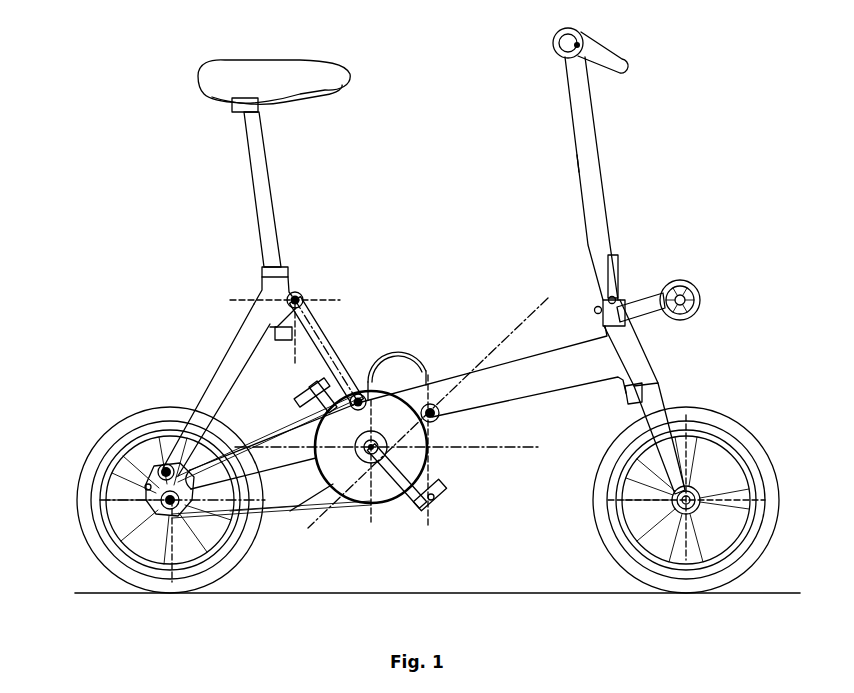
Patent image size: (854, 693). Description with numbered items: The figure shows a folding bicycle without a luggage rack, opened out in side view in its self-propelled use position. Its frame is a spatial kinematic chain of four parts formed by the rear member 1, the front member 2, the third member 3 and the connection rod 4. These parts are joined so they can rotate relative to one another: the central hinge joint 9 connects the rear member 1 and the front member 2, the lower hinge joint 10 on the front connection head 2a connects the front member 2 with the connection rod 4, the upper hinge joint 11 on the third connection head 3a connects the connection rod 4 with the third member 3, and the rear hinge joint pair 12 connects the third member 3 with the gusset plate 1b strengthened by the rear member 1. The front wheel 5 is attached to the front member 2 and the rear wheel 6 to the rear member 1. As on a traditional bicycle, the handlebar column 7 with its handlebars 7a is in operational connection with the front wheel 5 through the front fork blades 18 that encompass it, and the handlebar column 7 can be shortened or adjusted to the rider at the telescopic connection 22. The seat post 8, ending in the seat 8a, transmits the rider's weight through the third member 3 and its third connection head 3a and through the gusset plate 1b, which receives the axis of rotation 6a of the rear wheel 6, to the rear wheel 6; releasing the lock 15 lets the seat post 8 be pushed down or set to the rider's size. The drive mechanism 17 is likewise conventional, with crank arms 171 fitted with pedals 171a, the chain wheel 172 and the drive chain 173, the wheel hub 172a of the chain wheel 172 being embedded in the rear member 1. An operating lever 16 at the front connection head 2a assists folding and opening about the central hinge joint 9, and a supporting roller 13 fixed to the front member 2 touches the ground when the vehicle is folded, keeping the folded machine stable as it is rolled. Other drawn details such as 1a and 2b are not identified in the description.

The rear member 1 is at (255, 467).
The rear frame pivot 1a is at (430, 413).
The gusset plate 1b is at (158, 487).
The front member 2 is at (517, 363).
The front connection head 2a is at (408, 390).
The head portion of front frame 2b is at (612, 292).
The third member 3 is at (232, 355).
The third connection head 3a is at (268, 308).
The connection rod 4 is at (314, 313).
The front wheel 5 is at (630, 568).
The rear wheel 6 is at (127, 575).
The axis of rotation of the rear wheel 6a is at (172, 500).
The handlebar column 7 is at (603, 208).
The handlebars 7a is at (608, 65).
The seat post 8 is at (265, 202).
The seat 8a is at (225, 83).
The central hinge joint 9 is at (434, 424).
The lower hinge joint 10 is at (362, 398).
The upper hinge joint 11 is at (297, 298).
The rear hinge joint pair 12 is at (163, 470).
The supporting roller 13 is at (688, 282).
The lock 15 is at (263, 273).
The operating lever 16 is at (402, 353).
The drive mechanism 17 is at (378, 478).
The crank arms 171 is at (403, 480).
The pedals 171a is at (423, 508).
The chain wheel 172 is at (331, 496).
The wheel hub 172a is at (333, 483).
The drive chain 173 is at (292, 510).
The front fork blades 18 is at (652, 406).
The telescopic connection 22 is at (588, 163).